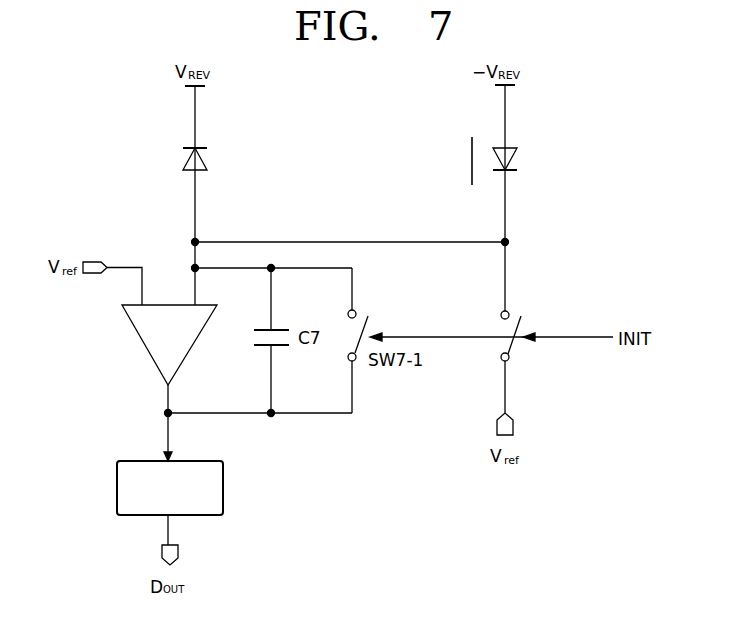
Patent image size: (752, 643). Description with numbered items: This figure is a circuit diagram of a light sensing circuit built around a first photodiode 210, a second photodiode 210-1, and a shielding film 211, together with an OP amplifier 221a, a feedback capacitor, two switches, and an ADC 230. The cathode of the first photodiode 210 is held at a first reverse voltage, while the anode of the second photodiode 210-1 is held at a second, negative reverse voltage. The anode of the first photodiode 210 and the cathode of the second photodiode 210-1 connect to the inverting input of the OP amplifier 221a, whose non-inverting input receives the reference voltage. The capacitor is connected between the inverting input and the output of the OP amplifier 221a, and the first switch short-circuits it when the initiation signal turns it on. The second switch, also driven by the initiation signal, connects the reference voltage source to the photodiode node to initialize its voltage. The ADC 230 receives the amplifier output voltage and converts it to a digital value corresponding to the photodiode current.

The first photodiode 210 is at (208, 158).
The second photodiode 210-1 is at (518, 157).
The shielding film 211 is at (470, 158).
The OP amplifier 221a is at (145, 347).
The ADC 230 is at (192, 461).